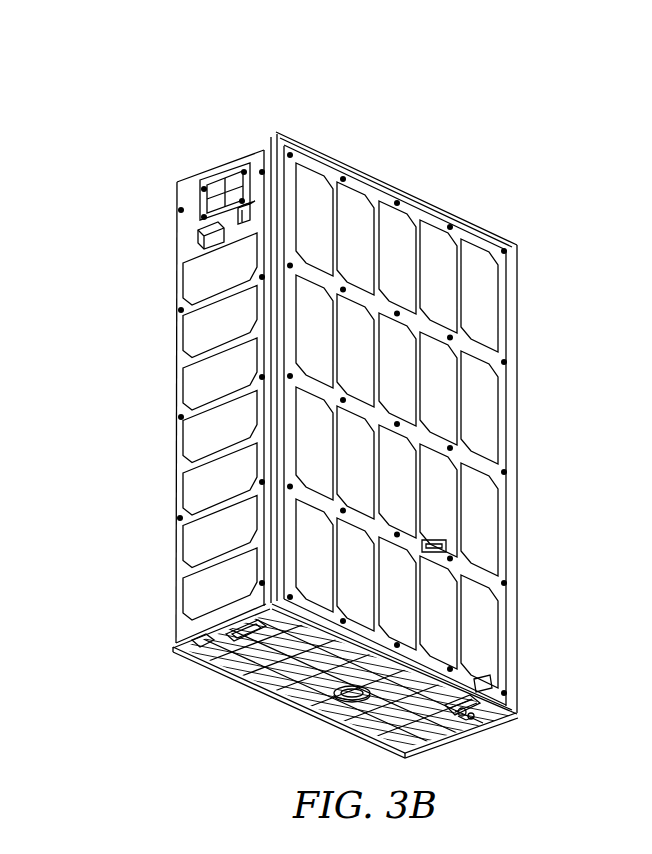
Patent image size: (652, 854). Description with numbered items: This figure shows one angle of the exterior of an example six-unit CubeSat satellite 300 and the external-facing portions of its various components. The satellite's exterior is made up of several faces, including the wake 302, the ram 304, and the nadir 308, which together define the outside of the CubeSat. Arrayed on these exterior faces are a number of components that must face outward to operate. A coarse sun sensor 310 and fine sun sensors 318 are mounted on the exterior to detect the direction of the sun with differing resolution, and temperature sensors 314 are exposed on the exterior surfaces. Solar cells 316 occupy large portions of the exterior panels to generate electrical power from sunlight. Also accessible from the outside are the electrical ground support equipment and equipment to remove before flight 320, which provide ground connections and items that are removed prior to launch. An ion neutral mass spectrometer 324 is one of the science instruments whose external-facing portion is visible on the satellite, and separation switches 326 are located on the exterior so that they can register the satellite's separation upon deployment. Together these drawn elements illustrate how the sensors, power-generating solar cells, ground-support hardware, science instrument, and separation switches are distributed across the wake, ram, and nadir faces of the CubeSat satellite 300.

The module assembly 300 is at (445, 106).
The wake 302 is at (199, 164).
The ram 304 is at (270, 665).
The nadir 308 is at (450, 389).
The coarse sun sensor 310 is at (173, 647).
The temperature sensors 314 is at (254, 204).
The solar cells 316 is at (440, 356).
The fine sun sensors 318 is at (225, 186).
The electrical ground support equipment and equipment to remove before flight 320 is at (198, 238).
The ion neutral mass spectrometer 324 is at (246, 650).
The separation switches 326 is at (460, 719).